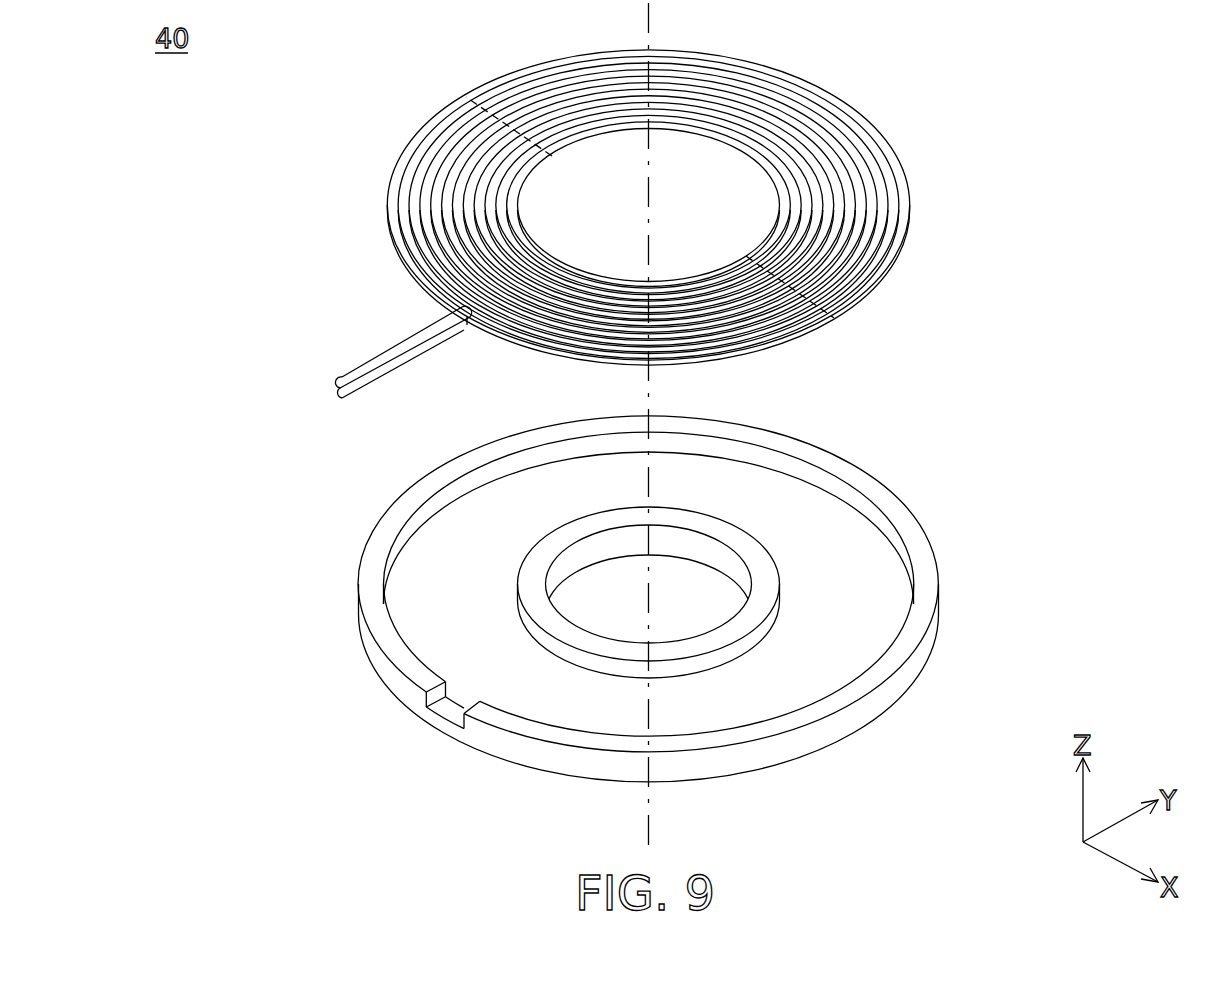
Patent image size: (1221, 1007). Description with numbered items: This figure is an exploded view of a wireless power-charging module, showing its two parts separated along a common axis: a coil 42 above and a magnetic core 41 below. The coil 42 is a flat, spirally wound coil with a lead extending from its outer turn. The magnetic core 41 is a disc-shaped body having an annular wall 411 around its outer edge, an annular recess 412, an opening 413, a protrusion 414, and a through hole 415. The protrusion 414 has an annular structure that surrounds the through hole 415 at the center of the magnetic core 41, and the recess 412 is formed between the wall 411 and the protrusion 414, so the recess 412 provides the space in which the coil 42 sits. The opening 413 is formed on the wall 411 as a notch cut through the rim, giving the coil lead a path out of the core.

The magnetic core 41 is at (666, 585).
The coil 42 is at (868, 140).
The annular wall 411 is at (910, 533).
The annular recess 412 is at (865, 603).
The opening 413 is at (448, 712).
The protrusion 414 is at (760, 558).
The through hole 415 is at (692, 582).